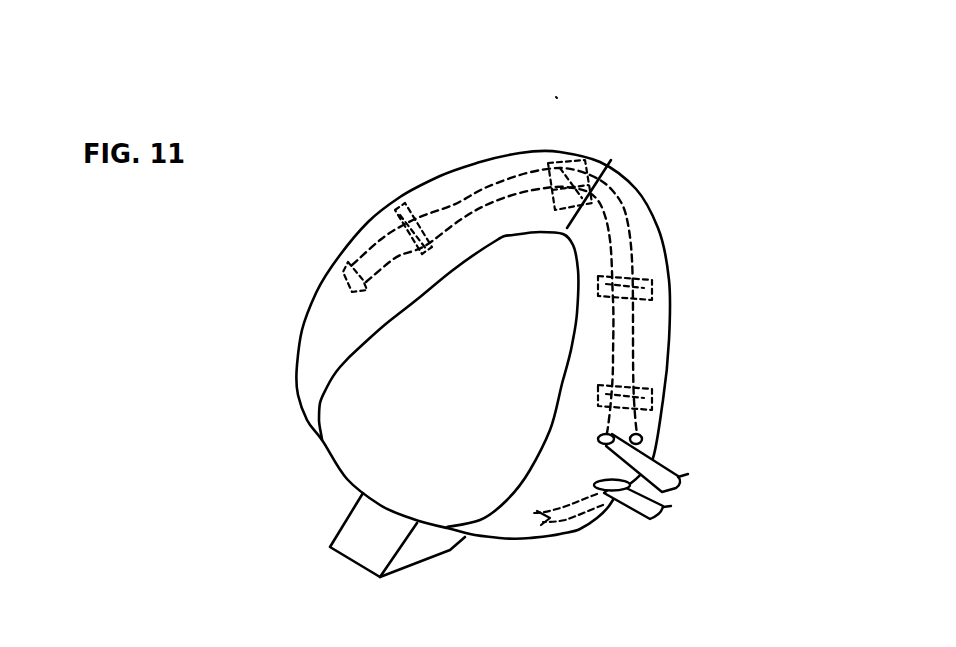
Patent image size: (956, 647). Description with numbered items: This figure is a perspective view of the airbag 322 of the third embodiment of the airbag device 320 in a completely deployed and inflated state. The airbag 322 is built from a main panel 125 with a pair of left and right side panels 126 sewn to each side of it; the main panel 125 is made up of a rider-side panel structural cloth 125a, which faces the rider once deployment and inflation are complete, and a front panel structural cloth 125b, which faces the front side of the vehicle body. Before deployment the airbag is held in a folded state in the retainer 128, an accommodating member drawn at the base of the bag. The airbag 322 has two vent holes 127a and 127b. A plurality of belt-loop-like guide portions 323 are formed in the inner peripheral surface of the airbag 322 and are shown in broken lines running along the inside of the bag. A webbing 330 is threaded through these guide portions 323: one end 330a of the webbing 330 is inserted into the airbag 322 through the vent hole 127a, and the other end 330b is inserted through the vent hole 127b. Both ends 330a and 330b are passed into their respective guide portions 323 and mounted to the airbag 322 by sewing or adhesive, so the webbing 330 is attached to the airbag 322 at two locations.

The airbag device 320 is at (558, 98).
The airbag 322 is at (678, 265).
The guide portions 323 is at (560, 170).
The main panel 125 is at (728, 96).
The rider-side panel structural cloth 125a is at (643, 237).
The front panel structural cloth 125b is at (607, 170).
The side panel 126 is at (365, 437).
The vent hole 127a is at (641, 434).
The vent hole 127b is at (603, 492).
The retainer 128 is at (430, 563).
The webbing 330 is at (675, 472).
The one end of the webbing 330a is at (348, 265).
The other end of the webbing 330b is at (552, 524).